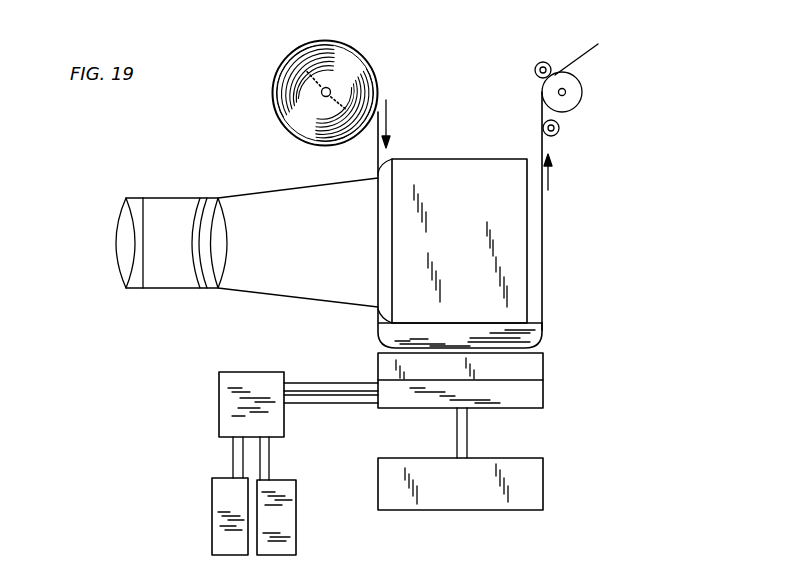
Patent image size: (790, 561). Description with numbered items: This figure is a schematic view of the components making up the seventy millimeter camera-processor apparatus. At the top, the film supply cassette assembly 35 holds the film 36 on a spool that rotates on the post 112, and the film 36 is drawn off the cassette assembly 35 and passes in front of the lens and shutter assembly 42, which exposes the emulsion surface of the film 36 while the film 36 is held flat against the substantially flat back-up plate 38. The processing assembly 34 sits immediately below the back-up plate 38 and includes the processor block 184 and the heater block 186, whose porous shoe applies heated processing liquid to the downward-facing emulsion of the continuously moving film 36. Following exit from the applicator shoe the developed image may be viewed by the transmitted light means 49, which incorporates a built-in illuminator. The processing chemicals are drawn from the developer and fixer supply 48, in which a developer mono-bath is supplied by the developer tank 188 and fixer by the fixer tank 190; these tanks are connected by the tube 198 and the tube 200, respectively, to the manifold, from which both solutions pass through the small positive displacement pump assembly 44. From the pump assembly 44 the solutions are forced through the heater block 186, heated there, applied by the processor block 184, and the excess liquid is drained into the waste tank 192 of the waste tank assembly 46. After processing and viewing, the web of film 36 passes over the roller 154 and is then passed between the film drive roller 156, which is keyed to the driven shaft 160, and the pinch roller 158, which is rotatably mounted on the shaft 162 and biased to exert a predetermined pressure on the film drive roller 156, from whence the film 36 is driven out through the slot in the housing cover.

The film supply cassette assembly 35 is at (276, 117).
The post 112 is at (330, 90).
The pinch roller 158 is at (534, 70).
The shaft 162 is at (540, 65).
The film drive roller 156 is at (570, 110).
The shaft 160 is at (565, 94).
The film 36 is at (578, 57).
The roller 154 is at (549, 134).
The transmitted light means 49 is at (472, 150).
The back-up plate 38 is at (494, 314).
The lens and shutter assembly 42 is at (104, 242).
The processing assembly 34 is at (474, 390).
The processor block 184 is at (393, 355).
The heater block 186 is at (390, 404).
The pump assembly 44 is at (200, 408).
The tube 198 is at (233, 463).
The tube 200 is at (269, 463).
The developer and fixer supply 48 is at (196, 516).
The developer tank 188 is at (218, 539).
The fixer tank 190 is at (296, 538).
The waste tank assembly 46 is at (486, 475).
The waste tank 192 is at (470, 502).